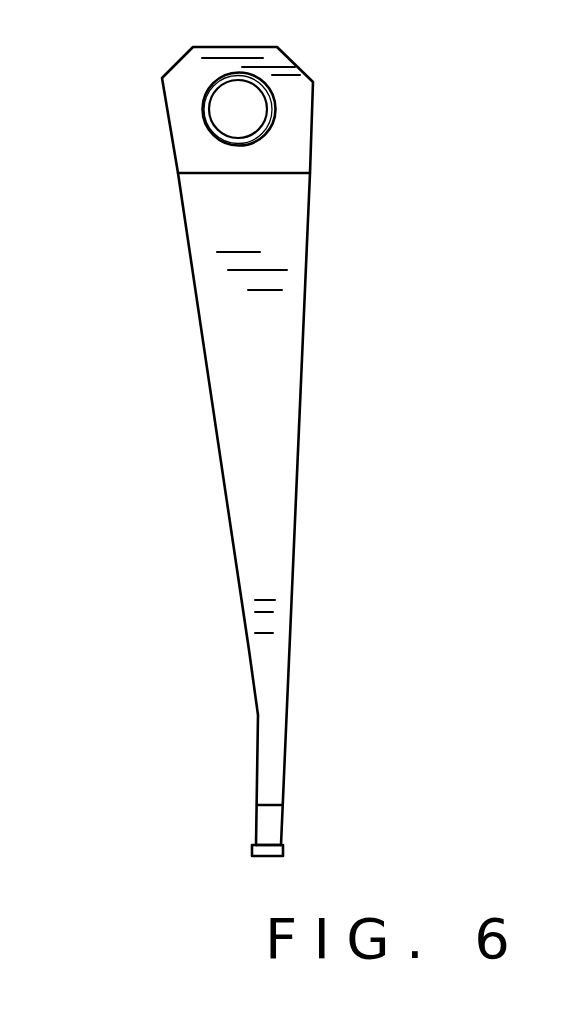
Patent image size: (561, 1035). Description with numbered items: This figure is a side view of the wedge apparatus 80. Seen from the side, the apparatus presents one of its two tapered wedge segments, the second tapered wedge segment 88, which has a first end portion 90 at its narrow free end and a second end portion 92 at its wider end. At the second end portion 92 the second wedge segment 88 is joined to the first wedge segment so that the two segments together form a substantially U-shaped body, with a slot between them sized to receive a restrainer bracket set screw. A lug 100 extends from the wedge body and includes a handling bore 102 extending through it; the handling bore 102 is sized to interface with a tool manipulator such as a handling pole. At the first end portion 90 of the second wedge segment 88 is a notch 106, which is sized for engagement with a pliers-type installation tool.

The wedge apparatus 80 is at (117, 112).
The second tapered wedge segment 88 is at (301, 465).
The first end portion 90 is at (318, 768).
The second end portion 92 is at (340, 200).
The lug 100 is at (312, 106).
The handling bore 102 is at (253, 98).
The notch 106 is at (255, 833).